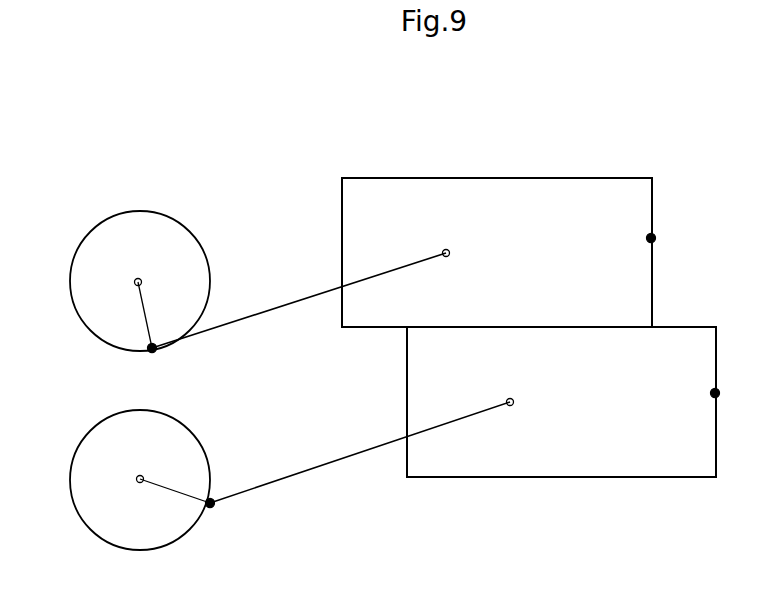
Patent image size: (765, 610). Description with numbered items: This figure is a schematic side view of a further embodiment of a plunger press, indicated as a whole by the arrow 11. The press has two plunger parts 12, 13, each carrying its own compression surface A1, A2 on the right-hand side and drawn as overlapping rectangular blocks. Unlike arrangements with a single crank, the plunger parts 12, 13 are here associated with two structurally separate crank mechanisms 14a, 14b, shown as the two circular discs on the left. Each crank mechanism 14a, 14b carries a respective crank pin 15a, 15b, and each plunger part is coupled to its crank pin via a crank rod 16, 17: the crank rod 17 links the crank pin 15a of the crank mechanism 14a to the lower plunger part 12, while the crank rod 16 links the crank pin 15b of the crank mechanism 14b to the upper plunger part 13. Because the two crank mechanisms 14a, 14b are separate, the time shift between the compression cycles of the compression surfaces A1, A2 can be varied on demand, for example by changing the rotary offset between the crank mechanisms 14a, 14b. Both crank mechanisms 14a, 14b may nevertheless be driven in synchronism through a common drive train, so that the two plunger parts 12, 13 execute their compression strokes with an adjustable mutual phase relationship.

The drive mechanism 11 is at (294, 200).
The plunger part 12 is at (510, 453).
The plunger part 13 is at (443, 201).
The crank mechanism 14a is at (101, 506).
The crank mechanism 14b is at (99, 253).
The crank pin 15a is at (210, 503).
The crank pin 15b is at (152, 348).
The crank rod 16 is at (295, 301).
The crank rod 17 is at (330, 460).
The compression surface A1 is at (715, 393).
The compression surface A2 is at (651, 238).